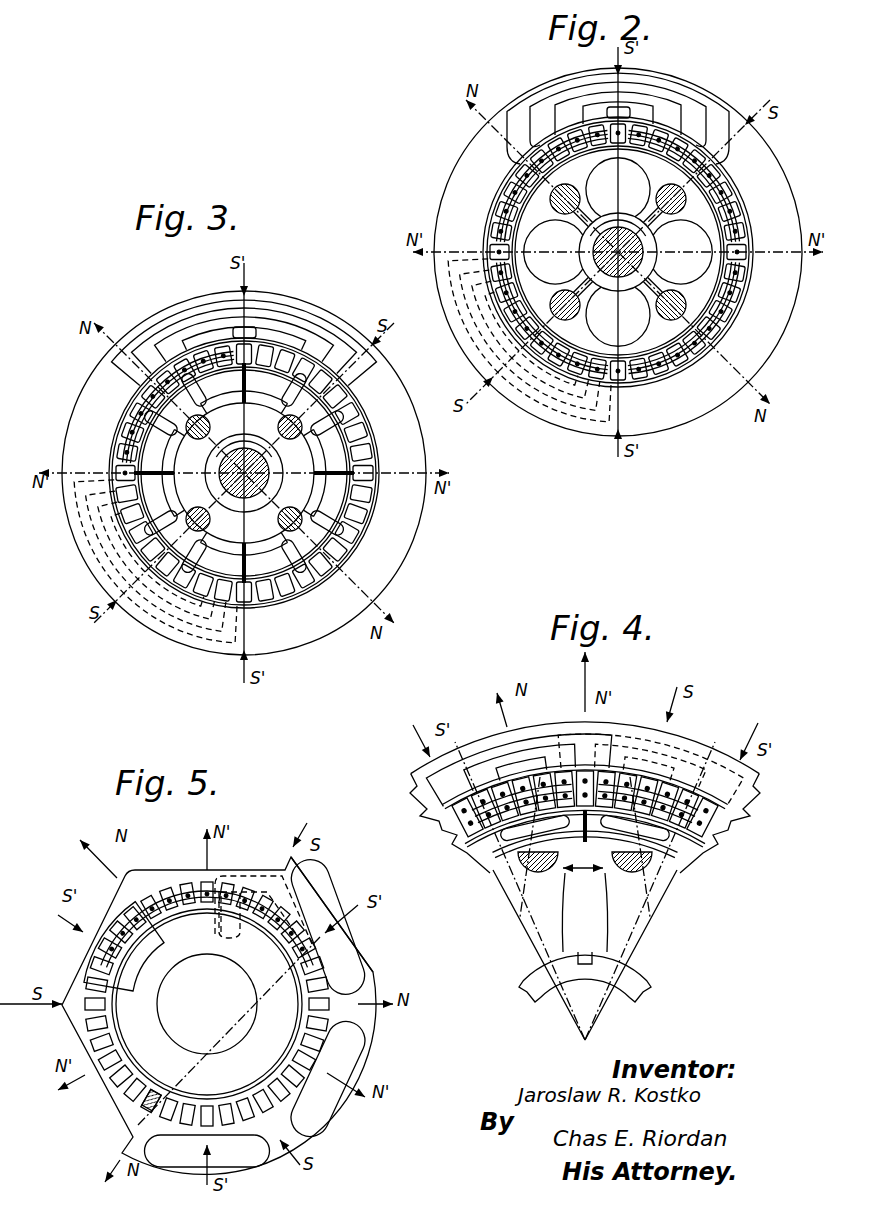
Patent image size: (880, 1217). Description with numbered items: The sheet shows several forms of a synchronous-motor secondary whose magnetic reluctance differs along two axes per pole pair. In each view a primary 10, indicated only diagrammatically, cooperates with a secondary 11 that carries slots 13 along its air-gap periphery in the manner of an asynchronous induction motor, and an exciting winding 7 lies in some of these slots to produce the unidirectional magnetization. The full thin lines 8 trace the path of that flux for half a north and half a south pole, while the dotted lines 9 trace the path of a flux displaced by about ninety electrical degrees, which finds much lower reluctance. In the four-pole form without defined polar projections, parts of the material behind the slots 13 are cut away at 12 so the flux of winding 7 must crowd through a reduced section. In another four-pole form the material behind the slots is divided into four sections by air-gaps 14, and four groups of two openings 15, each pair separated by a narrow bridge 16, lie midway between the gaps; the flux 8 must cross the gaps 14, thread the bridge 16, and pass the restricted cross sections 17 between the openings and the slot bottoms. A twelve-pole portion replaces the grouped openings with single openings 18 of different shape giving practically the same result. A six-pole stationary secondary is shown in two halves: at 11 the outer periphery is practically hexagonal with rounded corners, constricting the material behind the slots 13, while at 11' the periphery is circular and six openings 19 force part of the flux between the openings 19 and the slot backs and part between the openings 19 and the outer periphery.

In FIG. 2, the winding 7 is at (621, 266).
In FIG. 3, the winding 7 is at (140, 408).
In FIG. 4, the winding 7 is at (603, 802).
In FIG. 5, the winding 7 is at (207, 894).
In FIG. 2, the full thin flux lines 8 is at (618, 106).
In FIG. 3, the full thin flux lines 8 is at (244, 325).
In FIG. 4, the full thin flux lines 8 is at (518, 743).
In FIG. 5, the full thin flux lines 8 is at (127, 954).
In FIG. 2, the dotted flux lines 9 is at (529, 352).
In FIG. 3, the dotted flux lines 9 is at (140, 561).
In FIG. 4, the dotted flux lines 9 is at (650, 743).
In FIG. 5, the dotted flux lines 9 is at (255, 924).
In FIG. 2, the primary 10 is at (608, 252).
In FIG. 3, the primary 10 is at (236, 473).
In FIG. 4, the primary 10 is at (565, 797).
In FIG. 5, the primary 10 is at (207, 1004).
In FIG. 2, the secondary 11 is at (618, 283).
In FIG. 3, the secondary 11 is at (270, 473).
In FIG. 4, the secondary 11 is at (573, 817).
In FIG. 5, the secondary 11 is at (241, 1013).
In FIG. 5, the second form of stationary secondary 11' is at (354, 914).
In FIG. 2, the cut-away portions 12 is at (616, 252).
In FIG. 2, the slots 13 is at (618, 252).
In FIG. 3, the slots 13 is at (244, 473).
In FIG. 4, the slots 13 is at (673, 840).
In FIG. 5, the slots 13 is at (110, 1109).
In FIG. 3, the air-gaps 14 is at (243, 472).
In FIG. 4, the air-gaps 14 is at (586, 886).
In FIG. 3, the openings 15 is at (244, 473).
In FIG. 3, the bridge 16 is at (243, 472).
In FIG. 3, the restricted cross sections 17 is at (244, 484).
In FIG. 4, the single openings 18 is at (607, 908).
In FIG. 5, the openings 19 is at (250, 1020).